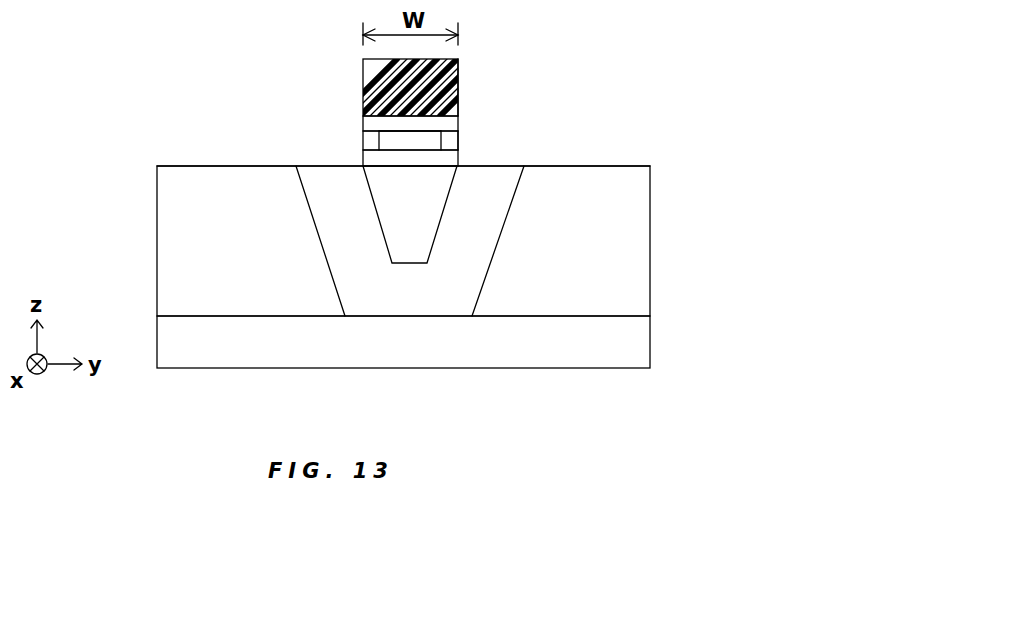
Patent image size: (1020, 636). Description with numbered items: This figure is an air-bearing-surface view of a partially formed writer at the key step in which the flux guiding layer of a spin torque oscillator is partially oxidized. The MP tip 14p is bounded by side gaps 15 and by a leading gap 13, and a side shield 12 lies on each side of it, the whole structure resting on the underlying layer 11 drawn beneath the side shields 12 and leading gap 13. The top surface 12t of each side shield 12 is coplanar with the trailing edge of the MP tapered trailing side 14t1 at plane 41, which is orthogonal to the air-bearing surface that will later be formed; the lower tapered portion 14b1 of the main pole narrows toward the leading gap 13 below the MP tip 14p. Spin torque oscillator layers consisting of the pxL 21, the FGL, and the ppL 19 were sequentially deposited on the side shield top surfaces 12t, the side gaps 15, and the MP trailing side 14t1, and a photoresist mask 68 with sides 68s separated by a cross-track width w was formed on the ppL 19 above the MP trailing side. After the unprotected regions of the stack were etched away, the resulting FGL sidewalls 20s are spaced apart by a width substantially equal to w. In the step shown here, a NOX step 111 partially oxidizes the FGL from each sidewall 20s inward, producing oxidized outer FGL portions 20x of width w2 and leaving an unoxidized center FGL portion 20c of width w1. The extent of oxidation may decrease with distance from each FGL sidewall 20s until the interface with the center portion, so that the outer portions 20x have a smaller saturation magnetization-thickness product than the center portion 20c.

The NOX step 111 is at (201, 60).
The photoresist mask 68 is at (372, 87).
The sides of the photoresist mask 68s is at (460, 86).
The ppL 19 is at (372, 120).
The center FGL portion 20c is at (430, 133).
The oxidized outer FGL portions 20x is at (372, 140).
The FGL sidewalls 20s is at (460, 137).
The pxL 21 is at (372, 160).
The top surface of side shield 12t is at (212, 165).
The plane 41- 41 is at (150, 168).
The MP tapered trailing side 14t1 is at (397, 168).
The side gaps 15 is at (342, 238).
The side shield 12 is at (183, 302).
The substrate 11 is at (639, 348).
The MP tip 14p is at (392, 263).
The leading gap 13 is at (400, 220).
The lower portion of via 14b1 is at (412, 263).